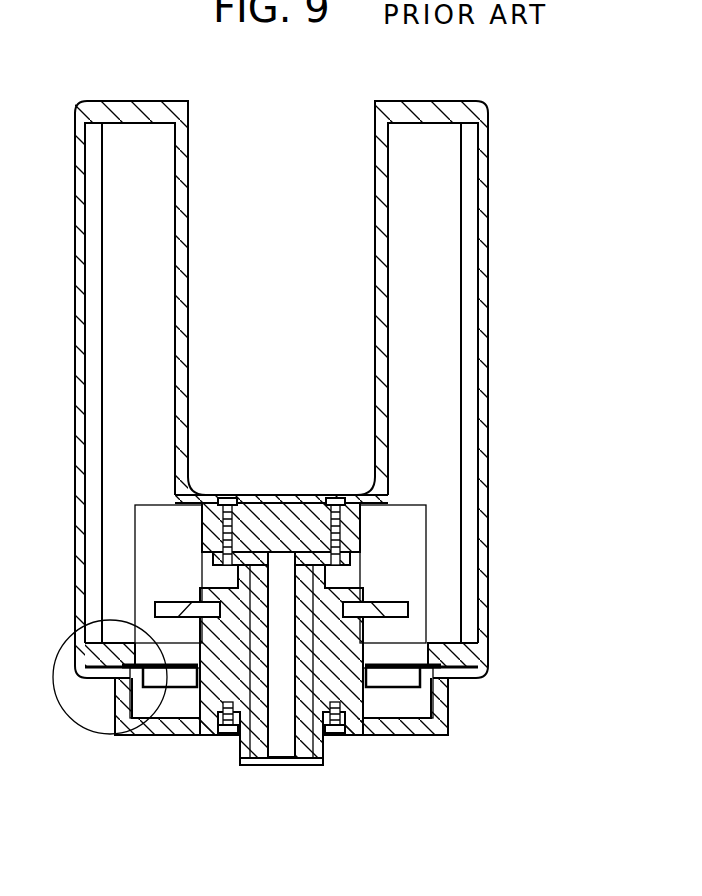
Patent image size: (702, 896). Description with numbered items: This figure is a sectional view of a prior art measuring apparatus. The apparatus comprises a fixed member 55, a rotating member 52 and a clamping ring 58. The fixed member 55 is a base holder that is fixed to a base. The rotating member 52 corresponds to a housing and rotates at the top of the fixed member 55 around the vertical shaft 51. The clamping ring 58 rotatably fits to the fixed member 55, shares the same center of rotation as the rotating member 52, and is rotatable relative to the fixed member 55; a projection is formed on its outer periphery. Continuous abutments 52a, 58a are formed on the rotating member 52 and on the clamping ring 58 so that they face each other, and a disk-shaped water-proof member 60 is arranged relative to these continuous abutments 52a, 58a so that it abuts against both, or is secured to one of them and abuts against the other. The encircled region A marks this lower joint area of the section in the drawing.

The vertical shaft 51 is at (261, 572).
The rotating member 52 is at (375, 220).
The continuous abutment 52a is at (430, 668).
The fixed member 55 is at (438, 727).
The clamping ring 58 is at (428, 675).
The continuous abutment 58a is at (393, 680).
The water-proof member 60 is at (440, 662).
The enlarged portion A is at (110, 734).